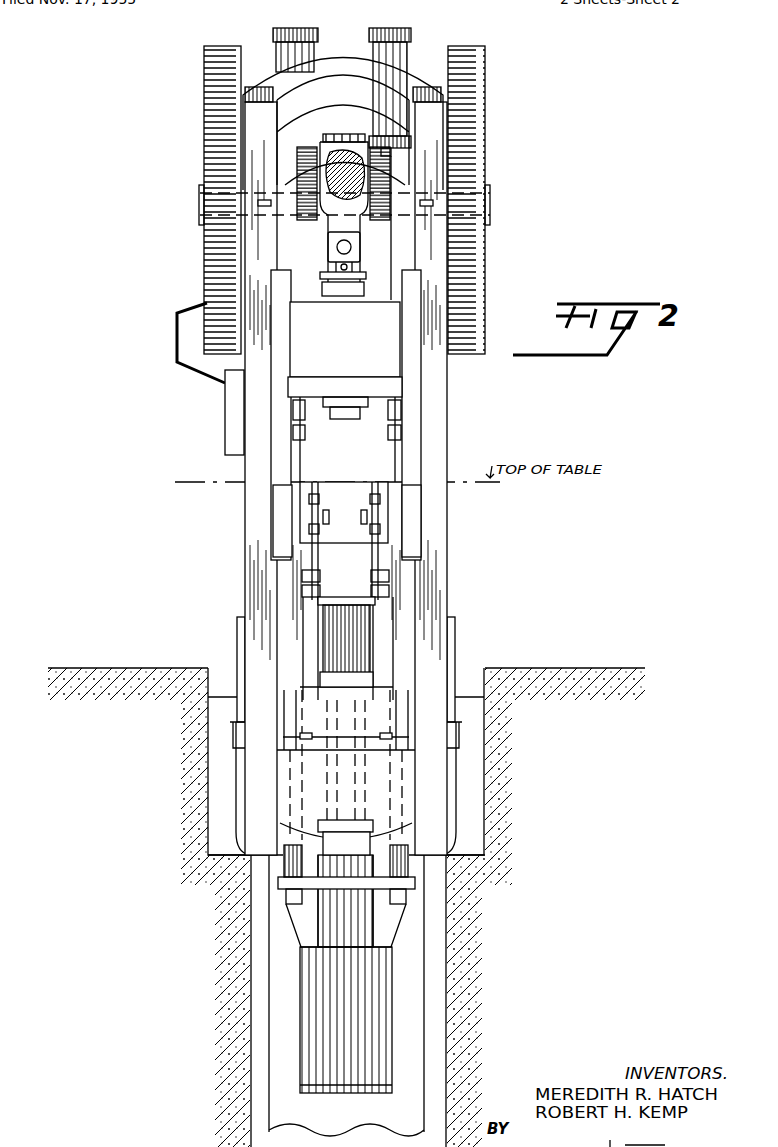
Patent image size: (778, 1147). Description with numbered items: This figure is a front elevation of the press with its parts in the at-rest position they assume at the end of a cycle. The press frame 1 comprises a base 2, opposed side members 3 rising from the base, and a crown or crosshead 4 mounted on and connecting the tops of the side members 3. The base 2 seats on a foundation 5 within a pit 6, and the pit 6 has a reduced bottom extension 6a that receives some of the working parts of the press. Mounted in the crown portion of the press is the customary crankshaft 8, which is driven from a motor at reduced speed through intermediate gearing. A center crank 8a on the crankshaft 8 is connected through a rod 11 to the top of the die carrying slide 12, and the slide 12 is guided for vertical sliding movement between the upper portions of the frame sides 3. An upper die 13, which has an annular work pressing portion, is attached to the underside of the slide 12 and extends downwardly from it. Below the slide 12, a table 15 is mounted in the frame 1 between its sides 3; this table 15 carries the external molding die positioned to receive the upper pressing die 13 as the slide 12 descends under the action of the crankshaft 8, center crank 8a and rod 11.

The press frame 1 is at (465, 552).
The base 2 is at (446, 803).
The side members 3 is at (250, 536).
The crown or crosshead 4 is at (327, 80).
The foundation 5 is at (470, 856).
The pit 6 is at (472, 757).
The reduced bottom extension 6a is at (407, 1000).
The crankshaft 8 is at (410, 198).
The center crank 8a is at (325, 170).
The rod 11 is at (356, 226).
The die carrying slide 12 is at (345, 349).
The upper die 13 is at (337, 407).
The table 15 is at (340, 492).